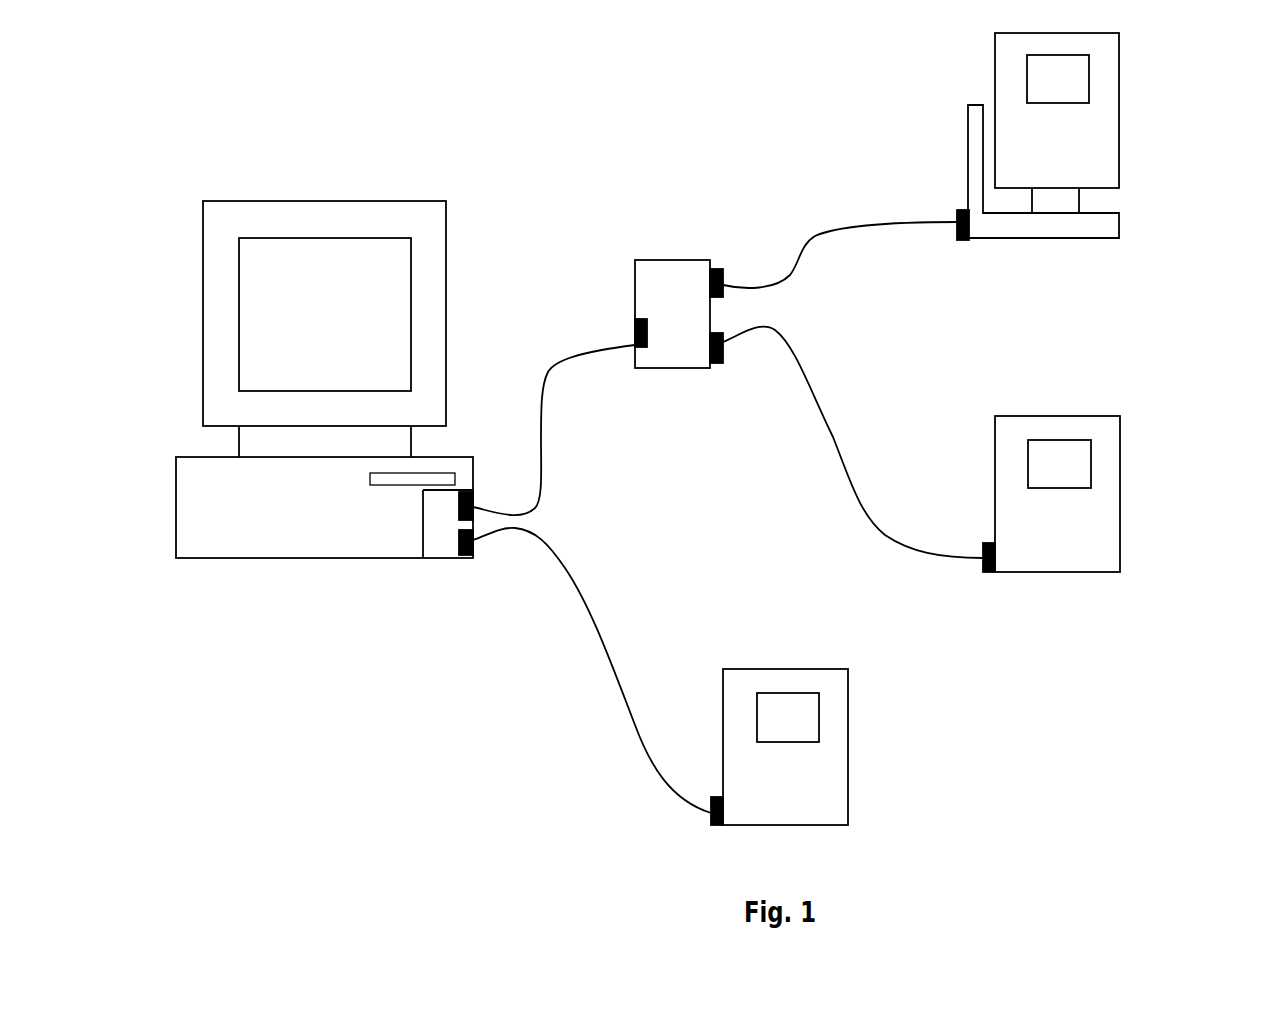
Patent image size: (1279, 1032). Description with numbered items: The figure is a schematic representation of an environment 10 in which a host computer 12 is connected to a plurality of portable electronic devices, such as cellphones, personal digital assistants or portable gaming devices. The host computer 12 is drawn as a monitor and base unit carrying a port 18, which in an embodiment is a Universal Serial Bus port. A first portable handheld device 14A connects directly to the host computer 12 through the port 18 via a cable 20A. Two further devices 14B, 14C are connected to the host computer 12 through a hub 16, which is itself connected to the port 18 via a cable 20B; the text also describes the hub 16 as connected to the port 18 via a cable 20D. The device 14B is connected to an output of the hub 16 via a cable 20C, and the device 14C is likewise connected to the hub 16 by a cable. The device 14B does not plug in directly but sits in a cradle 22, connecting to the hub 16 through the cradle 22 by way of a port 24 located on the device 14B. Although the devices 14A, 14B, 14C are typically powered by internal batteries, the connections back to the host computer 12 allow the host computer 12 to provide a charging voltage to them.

The environment 10 is at (1165, 758).
The host computer 12 is at (226, 540).
The portable handheld device 14A is at (850, 735).
The portable electronic device 14B is at (1120, 67).
The portable electronic device 14C is at (1122, 487).
The hub 16 is at (675, 260).
The port 18 is at (450, 558).
The cable 20A is at (605, 648).
The cable 20B is at (542, 453).
The cable 20C is at (895, 227).
The cable 20D is at (852, 497).
The cradle 22 is at (1119, 238).
The port 24 is at (1083, 200).